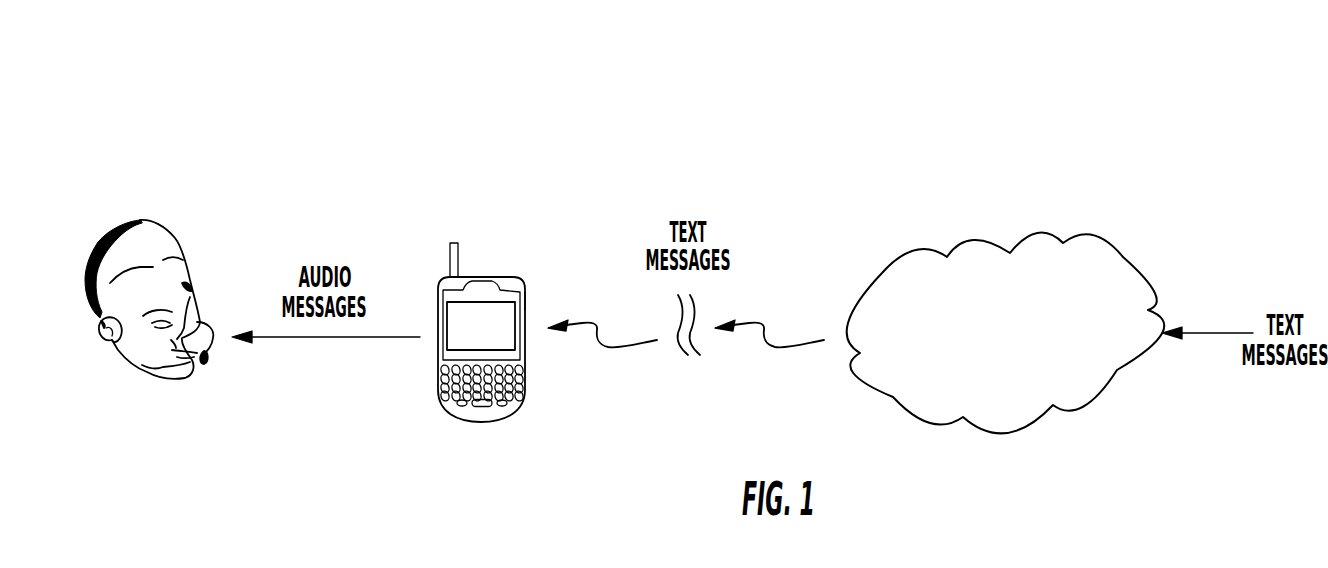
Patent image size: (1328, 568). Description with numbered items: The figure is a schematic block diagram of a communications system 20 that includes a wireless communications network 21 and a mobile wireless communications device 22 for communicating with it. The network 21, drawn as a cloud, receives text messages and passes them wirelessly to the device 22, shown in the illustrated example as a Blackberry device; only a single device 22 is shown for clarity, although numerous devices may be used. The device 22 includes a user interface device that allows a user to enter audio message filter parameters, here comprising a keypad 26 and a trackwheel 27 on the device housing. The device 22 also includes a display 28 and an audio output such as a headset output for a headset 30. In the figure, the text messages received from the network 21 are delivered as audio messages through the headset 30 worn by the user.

The communications system 20 is at (1025, 73).
The wireless communications network 21 is at (927, 252).
The mobile wireless communications device 22 is at (483, 273).
The keypad 26 is at (480, 392).
The trackwheel 27 is at (525, 302).
The display 28 is at (475, 313).
The headset 30 is at (208, 316).